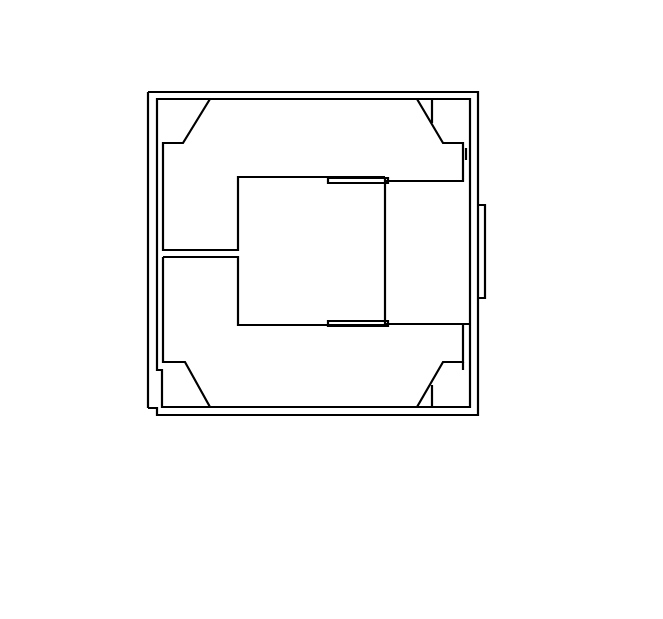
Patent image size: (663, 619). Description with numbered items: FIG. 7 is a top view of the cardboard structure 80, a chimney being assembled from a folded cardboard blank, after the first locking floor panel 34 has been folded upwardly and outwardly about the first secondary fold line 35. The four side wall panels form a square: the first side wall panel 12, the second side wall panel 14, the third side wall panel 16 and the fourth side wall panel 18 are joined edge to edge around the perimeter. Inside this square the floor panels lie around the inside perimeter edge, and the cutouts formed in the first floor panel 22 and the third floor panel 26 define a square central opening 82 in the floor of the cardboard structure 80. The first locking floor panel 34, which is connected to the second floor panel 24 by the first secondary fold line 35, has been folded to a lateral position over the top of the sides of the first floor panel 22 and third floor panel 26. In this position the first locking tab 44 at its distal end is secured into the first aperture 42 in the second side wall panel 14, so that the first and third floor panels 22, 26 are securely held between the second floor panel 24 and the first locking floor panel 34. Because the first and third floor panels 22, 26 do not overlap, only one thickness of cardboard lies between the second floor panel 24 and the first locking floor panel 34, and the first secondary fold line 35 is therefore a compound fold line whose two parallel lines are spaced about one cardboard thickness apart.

The cardboard structure 80 is at (118, 71).
The second side wall panel 14 is at (480, 117).
The fourth side wall panel 18 is at (147, 340).
The third side wall panel 16 is at (201, 91).
The first floor panel 22 is at (251, 386).
The third floor panel 26 is at (374, 121).
The first side wall panel 12 is at (427, 416).
The central opening 82 is at (326, 268).
The first secondary fold line 35 is at (383, 218).
The first locking floor panel 34 is at (440, 302).
The first aperture 42 is at (481, 206).
The first locking tab 44 is at (486, 257).
The second floor panel 24 is at (446, 364).